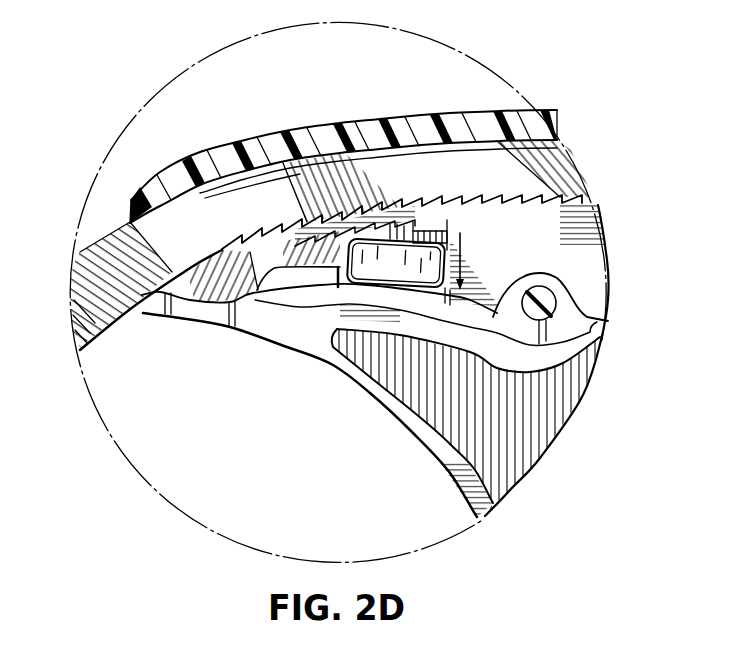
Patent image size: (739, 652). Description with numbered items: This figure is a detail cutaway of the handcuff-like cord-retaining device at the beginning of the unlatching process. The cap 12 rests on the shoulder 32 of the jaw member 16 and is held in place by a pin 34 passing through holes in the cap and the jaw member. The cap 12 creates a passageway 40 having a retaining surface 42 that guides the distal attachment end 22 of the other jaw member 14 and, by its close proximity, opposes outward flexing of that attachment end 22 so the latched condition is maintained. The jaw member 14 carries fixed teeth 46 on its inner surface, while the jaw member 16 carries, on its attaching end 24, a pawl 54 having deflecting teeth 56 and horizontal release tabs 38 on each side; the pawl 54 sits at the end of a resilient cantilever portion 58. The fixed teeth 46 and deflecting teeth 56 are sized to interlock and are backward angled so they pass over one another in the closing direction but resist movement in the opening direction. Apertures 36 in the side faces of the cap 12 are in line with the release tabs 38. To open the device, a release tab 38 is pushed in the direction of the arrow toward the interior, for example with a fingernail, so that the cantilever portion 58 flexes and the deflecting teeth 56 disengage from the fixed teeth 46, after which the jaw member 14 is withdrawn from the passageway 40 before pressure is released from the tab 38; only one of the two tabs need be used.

The cap 12 is at (420, 110).
The jaw member 14 is at (92, 230).
The jaw member 16 is at (443, 485).
The distal attachment end 22 is at (283, 163).
The distal attachment end 24 is at (372, 395).
The shoulder 32 is at (597, 329).
The pin 34 is at (540, 293).
The apertures 36 is at (343, 285).
The release tabs 38 is at (388, 198).
The passageway 40 is at (600, 270).
The retaining surface 42 is at (195, 195).
The fixed teeth 46 is at (503, 203).
The pawl 54 is at (425, 222).
The deflecting teeth 56 is at (358, 212).
The resilient cantilever portion 58 is at (245, 172).